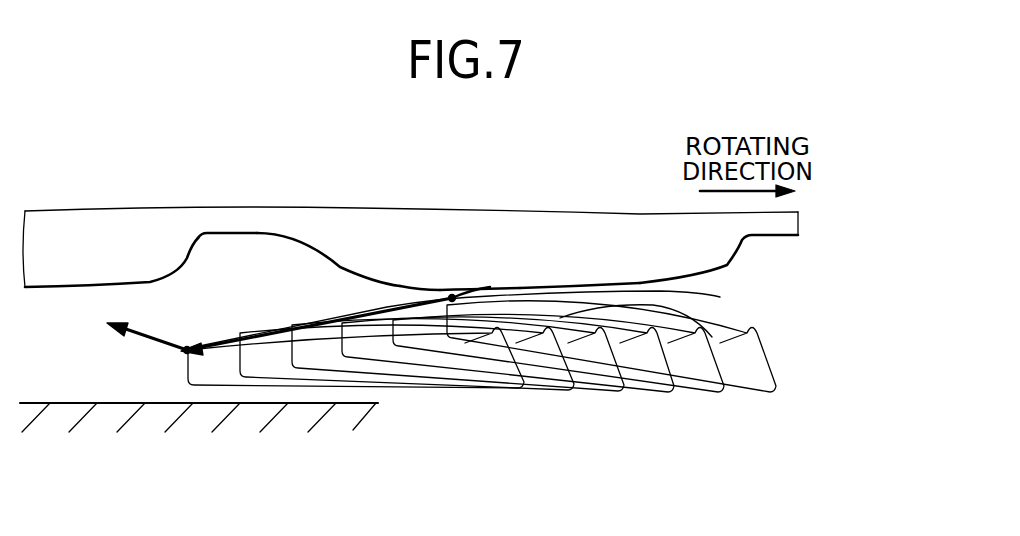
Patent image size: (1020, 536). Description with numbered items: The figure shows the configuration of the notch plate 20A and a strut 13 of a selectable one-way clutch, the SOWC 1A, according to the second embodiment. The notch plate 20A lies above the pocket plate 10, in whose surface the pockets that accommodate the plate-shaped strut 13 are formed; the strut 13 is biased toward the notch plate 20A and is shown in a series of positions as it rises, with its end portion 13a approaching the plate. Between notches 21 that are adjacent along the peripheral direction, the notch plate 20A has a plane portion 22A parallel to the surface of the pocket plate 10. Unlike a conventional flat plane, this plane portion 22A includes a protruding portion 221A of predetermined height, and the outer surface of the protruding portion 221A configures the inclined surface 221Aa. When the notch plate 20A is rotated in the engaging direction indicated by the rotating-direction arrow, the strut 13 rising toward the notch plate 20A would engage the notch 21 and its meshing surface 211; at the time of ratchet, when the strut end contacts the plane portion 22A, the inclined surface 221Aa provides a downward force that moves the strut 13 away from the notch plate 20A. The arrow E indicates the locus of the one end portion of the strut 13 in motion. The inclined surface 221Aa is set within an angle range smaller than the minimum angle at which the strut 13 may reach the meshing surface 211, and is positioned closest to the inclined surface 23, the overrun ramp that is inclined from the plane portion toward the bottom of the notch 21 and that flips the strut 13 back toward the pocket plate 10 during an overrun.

The SOWC 1A is at (90, 187).
The notch plate 20A is at (813, 222).
The notch 21 is at (233, 243).
The meshing surface 211 is at (195, 240).
The inclined surface (second inclined surface) 23 is at (333, 265).
The protruding portion 221A is at (407, 288).
The inclined surface (first inclined surface) 221Aa is at (483, 294).
The plane portion 22A is at (553, 292).
The arrow indicating locus of strut end portion E is at (310, 320).
The strut 13 is at (582, 403).
The blade tip 13a is at (653, 305).
The pocket plate 10 is at (73, 403).